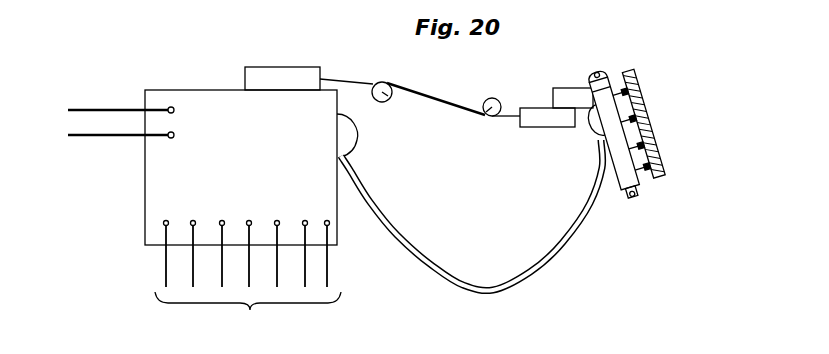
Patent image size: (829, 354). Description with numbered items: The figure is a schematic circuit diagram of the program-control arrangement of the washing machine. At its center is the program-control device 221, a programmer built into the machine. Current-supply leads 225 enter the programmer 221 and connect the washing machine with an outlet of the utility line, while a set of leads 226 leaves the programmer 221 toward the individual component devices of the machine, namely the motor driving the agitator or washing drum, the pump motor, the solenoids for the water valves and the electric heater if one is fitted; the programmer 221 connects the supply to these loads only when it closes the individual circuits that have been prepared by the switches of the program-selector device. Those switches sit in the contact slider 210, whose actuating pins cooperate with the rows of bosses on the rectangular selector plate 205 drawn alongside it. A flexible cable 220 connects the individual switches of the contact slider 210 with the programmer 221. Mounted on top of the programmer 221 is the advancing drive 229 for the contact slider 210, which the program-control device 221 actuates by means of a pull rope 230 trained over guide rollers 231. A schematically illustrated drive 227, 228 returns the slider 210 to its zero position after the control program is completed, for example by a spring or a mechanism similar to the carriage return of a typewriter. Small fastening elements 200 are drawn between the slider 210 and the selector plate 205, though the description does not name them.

The fastening pins 200 is at (648, 160).
The selector plate 205 is at (642, 132).
The contact slider 210 is at (606, 94).
The flexible cable 220 is at (487, 283).
The program-control device 221 is at (192, 100).
The current-supply leads 225 is at (85, 122).
The leads 226 is at (250, 312).
The return drive 227 is at (535, 112).
The return drive 228 is at (565, 97).
The advancing drive 229 is at (272, 78).
The pull rope 230 is at (435, 94).
The guide rollers 231 is at (486, 109).